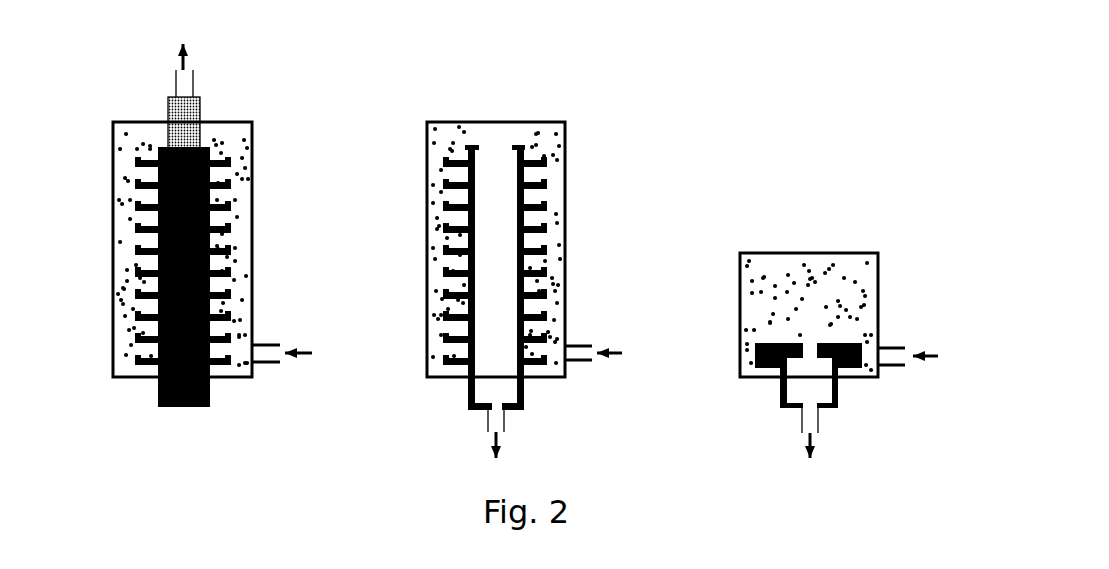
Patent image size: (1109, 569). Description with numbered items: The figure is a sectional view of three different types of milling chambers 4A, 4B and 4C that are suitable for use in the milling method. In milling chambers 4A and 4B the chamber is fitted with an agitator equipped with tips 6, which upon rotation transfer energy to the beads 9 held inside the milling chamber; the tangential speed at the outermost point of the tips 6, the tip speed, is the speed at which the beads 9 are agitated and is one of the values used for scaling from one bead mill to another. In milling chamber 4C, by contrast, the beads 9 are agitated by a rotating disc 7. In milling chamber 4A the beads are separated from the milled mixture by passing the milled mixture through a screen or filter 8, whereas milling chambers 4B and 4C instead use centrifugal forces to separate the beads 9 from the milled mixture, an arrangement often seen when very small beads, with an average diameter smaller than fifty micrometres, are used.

The milling chamber 4A is at (228, 115).
The milling chamber 4B is at (538, 113).
The milling chamber 4C is at (860, 245).
The tips 6 is at (228, 187).
The rotating disc 7 is at (847, 343).
The screen or filter 8 is at (197, 125).
The beads 9 is at (233, 267).